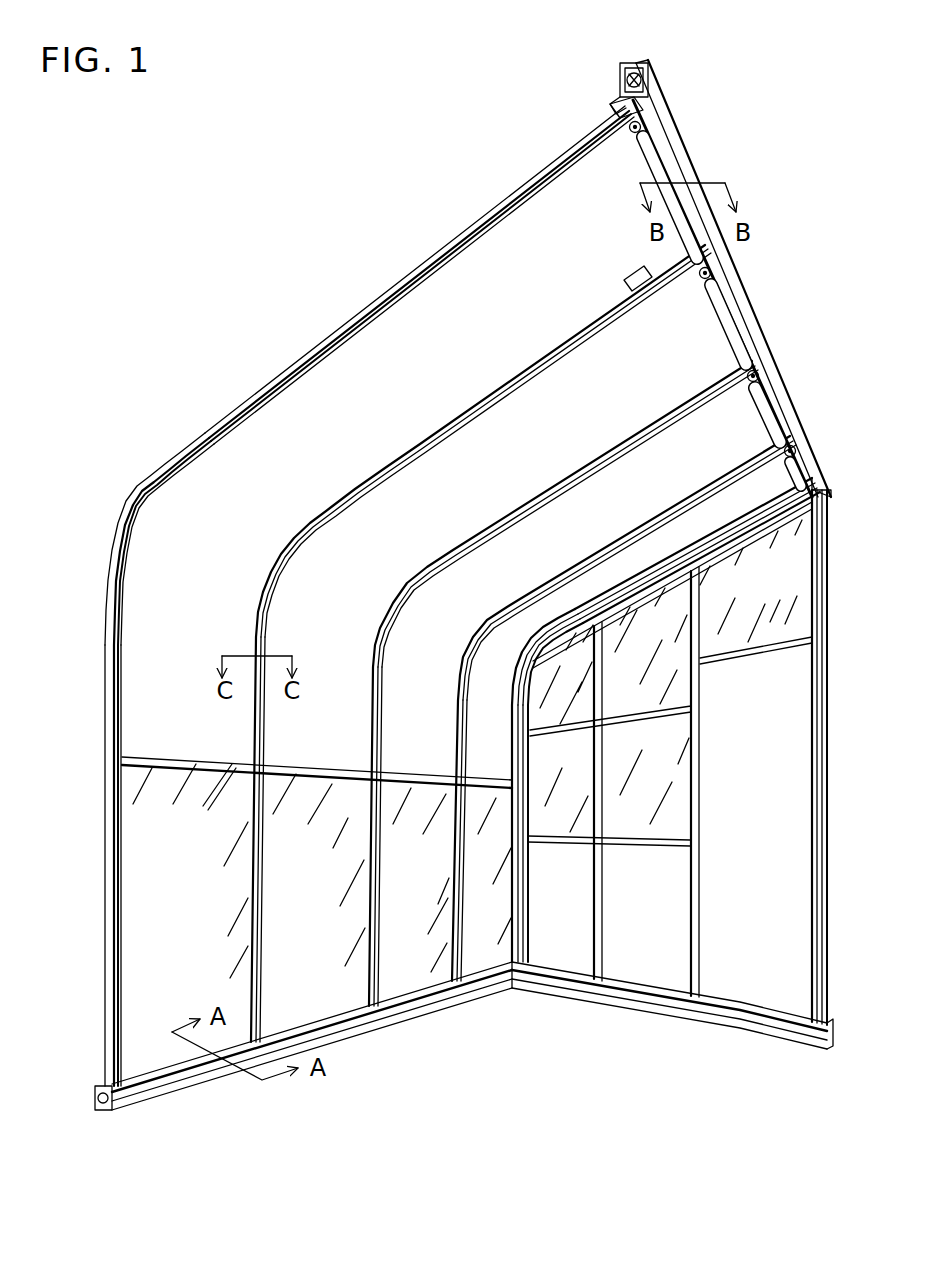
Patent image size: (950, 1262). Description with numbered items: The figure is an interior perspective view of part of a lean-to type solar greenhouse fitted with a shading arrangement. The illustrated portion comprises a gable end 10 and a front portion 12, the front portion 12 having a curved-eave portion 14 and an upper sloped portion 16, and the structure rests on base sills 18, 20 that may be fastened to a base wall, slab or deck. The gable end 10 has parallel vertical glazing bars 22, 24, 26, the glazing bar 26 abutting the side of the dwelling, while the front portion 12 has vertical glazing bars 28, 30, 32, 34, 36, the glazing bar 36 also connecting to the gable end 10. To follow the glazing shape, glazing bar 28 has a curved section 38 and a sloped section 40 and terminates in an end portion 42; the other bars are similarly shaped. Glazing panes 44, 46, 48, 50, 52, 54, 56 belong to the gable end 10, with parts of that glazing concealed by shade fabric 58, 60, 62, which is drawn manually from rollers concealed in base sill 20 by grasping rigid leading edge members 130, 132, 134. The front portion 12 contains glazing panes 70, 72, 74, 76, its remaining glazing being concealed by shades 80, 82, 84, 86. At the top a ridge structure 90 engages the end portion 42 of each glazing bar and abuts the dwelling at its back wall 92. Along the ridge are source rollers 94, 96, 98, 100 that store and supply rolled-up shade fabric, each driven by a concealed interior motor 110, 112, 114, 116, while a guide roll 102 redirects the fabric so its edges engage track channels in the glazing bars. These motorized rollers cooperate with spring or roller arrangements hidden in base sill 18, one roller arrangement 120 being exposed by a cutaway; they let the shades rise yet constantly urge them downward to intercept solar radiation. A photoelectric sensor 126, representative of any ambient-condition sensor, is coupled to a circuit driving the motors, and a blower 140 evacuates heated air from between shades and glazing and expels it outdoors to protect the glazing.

The gable end 10 is at (748, 960).
The front portion 12 is at (185, 880).
The curved-eave portion 14 is at (369, 596).
The upper sloped portion 16 is at (481, 581).
The base sill 18 is at (330, 1030).
The base sill 20 is at (756, 1018).
The vertical glazing bar 22 is at (592, 912).
The vertical glazing bar 24 is at (690, 930).
The vertical glazing bar 26 is at (813, 813).
The vertical glazing bar 28 is at (125, 842).
The vertical glazing bar 30 is at (268, 842).
The vertical glazing bar 32 is at (384, 840).
The vertical glazing bar 34 is at (469, 833).
The vertical glazing bar 36 is at (526, 790).
The curved section 38 is at (173, 458).
The sloped section 40 is at (367, 300).
The end portion 42 is at (619, 98).
The glazing pane 44 is at (527, 700).
The glazing pane 46 is at (578, 645).
The glazing pane 48 is at (677, 583).
The glazing pane 50 is at (640, 610).
The glazing pane 52 is at (683, 755).
The glazing pane 54 is at (803, 598).
The glazing pane 56 is at (796, 536).
The shade fabric 58 is at (572, 942).
The shade fabric 60 is at (670, 862).
The shade fabric 62 is at (795, 778).
The glazing pane 70 is at (185, 953).
The glazing pane 72 is at (335, 995).
The glazing pane 74 is at (418, 968).
The glazing pane 76 is at (470, 945).
The shade 80 is at (338, 372).
The shade 82 is at (690, 338).
The shade 84 is at (722, 441).
The shade 86 is at (806, 486).
The ridge structure 90 is at (699, 266).
The back wall 92 is at (665, 108).
The source roller 94 is at (658, 145).
The source roller 96 is at (727, 285).
The source roller 98 is at (770, 388).
The source roller 100 is at (786, 455).
The guide roll 102 is at (613, 102).
The interior motor 110 is at (629, 126).
The interior motor 112 is at (712, 273).
The interior motor 114 is at (765, 375).
The interior motor 116 is at (798, 450).
The roller arrangement 120 is at (103, 1110).
The photoelectric sensor 126 is at (632, 273).
The rigid leading edge member 130 is at (568, 833).
The rigid leading edge member 132 is at (655, 830).
The rigid leading edge member 134 is at (765, 640).
The blower 140 is at (650, 68).